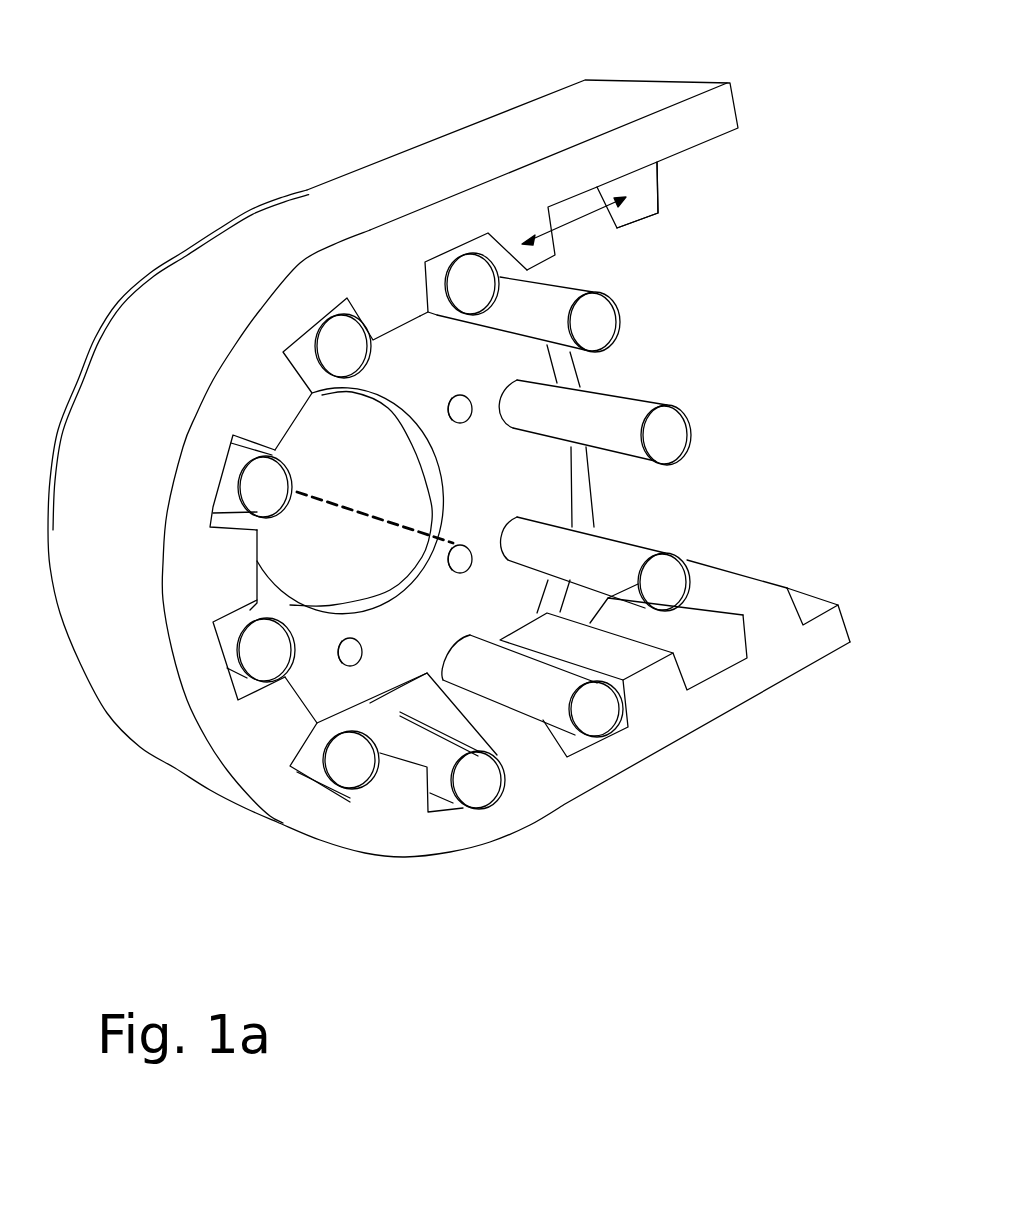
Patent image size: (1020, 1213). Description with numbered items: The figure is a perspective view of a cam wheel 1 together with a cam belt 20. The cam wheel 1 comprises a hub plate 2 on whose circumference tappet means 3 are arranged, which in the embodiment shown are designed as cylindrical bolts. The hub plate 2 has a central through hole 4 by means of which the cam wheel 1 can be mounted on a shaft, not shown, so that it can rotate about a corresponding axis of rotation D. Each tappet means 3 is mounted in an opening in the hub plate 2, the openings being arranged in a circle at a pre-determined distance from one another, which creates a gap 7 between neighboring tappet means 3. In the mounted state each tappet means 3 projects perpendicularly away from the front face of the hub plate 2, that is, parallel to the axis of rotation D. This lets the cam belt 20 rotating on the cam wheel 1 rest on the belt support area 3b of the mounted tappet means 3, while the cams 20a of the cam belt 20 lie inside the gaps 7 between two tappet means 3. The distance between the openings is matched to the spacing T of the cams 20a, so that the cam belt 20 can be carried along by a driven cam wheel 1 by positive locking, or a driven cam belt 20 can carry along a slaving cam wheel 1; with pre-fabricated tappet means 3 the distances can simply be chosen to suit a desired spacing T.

The cam wheel 1 is at (192, 233).
The hub plate 2 is at (547, 497).
The tappet means 3 is at (645, 417).
The belt support area 3b is at (647, 405).
The through hole 4 is at (373, 448).
The gap 7 is at (631, 368).
The cam belt 20 is at (518, 120).
The cams 20a is at (635, 185).
The spacing T is at (552, 222).
The axis of rotation D is at (383, 520).